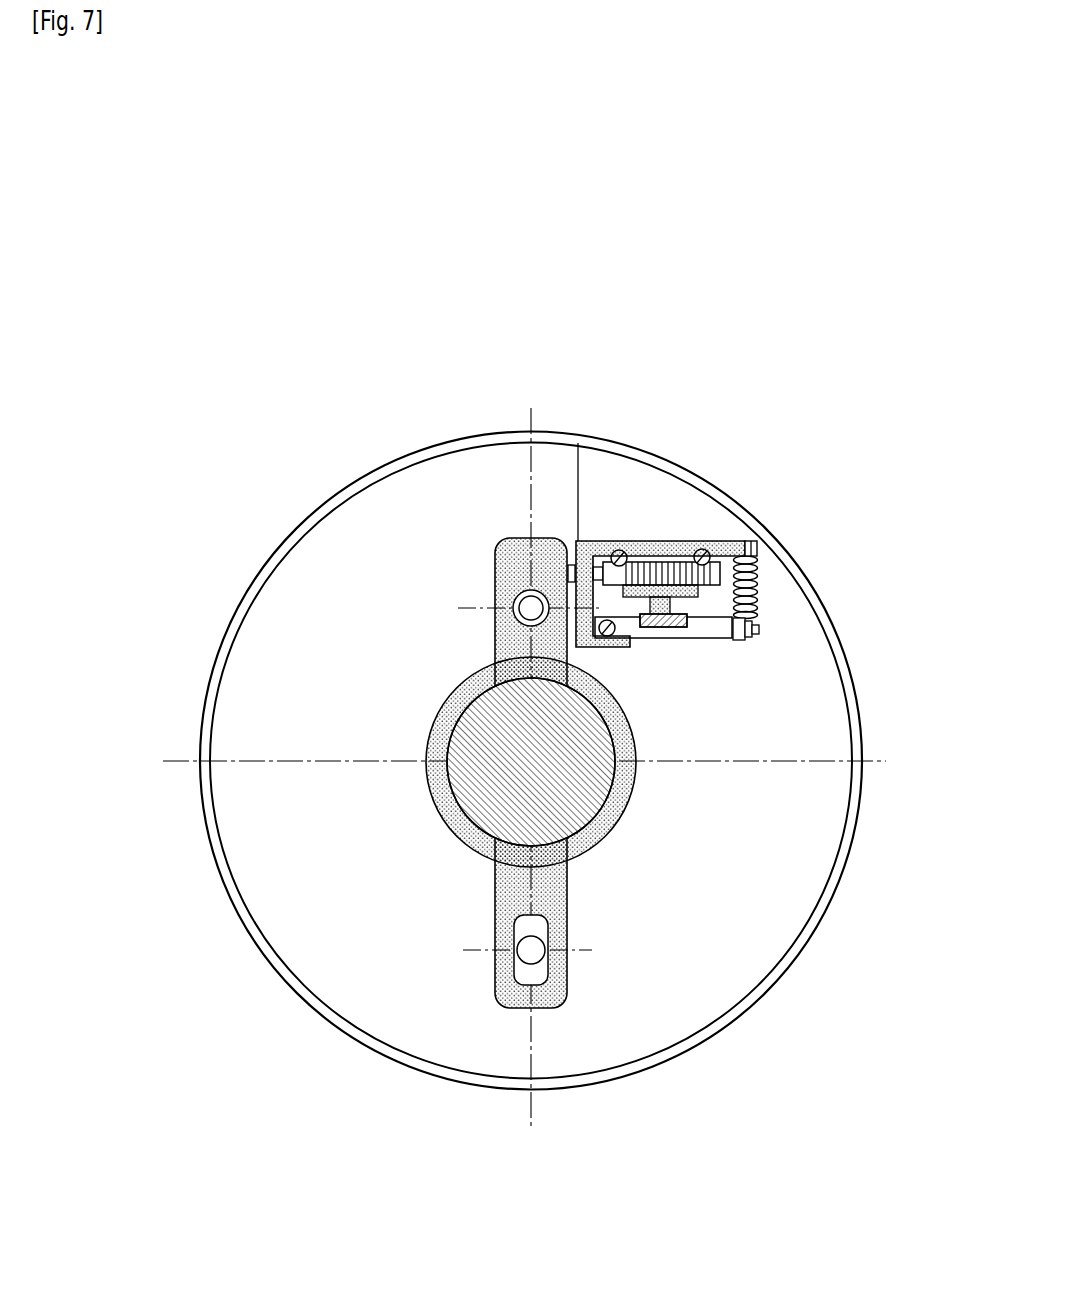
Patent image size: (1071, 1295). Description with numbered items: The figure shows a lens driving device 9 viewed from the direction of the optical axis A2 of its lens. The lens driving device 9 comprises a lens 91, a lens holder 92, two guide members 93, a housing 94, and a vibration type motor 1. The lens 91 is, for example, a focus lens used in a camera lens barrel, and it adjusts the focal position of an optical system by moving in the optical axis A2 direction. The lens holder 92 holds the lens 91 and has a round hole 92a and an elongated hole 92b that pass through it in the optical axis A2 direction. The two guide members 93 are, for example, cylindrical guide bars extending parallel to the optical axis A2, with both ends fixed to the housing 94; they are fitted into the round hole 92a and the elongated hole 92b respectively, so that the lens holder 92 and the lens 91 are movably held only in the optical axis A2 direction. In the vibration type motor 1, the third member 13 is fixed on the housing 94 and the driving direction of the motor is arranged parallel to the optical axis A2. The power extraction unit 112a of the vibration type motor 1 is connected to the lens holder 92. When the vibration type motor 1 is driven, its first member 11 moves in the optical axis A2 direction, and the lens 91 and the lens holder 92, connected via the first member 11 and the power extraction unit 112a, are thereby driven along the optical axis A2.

The vibration type motor 1 is at (787, 660).
The lens driving device 9 is at (174, 336).
The first member 11 is at (713, 597).
The third member 13 is at (680, 547).
The lens 91 is at (487, 725).
The lens holder 92 is at (442, 717).
The round hole 92a is at (513, 593).
The elongated hole 92b is at (508, 967).
The guide members 93 is at (514, 946).
The housing 94 is at (250, 942).
The power extraction unit 112a is at (570, 562).
The optical axis A2 is at (580, 800).